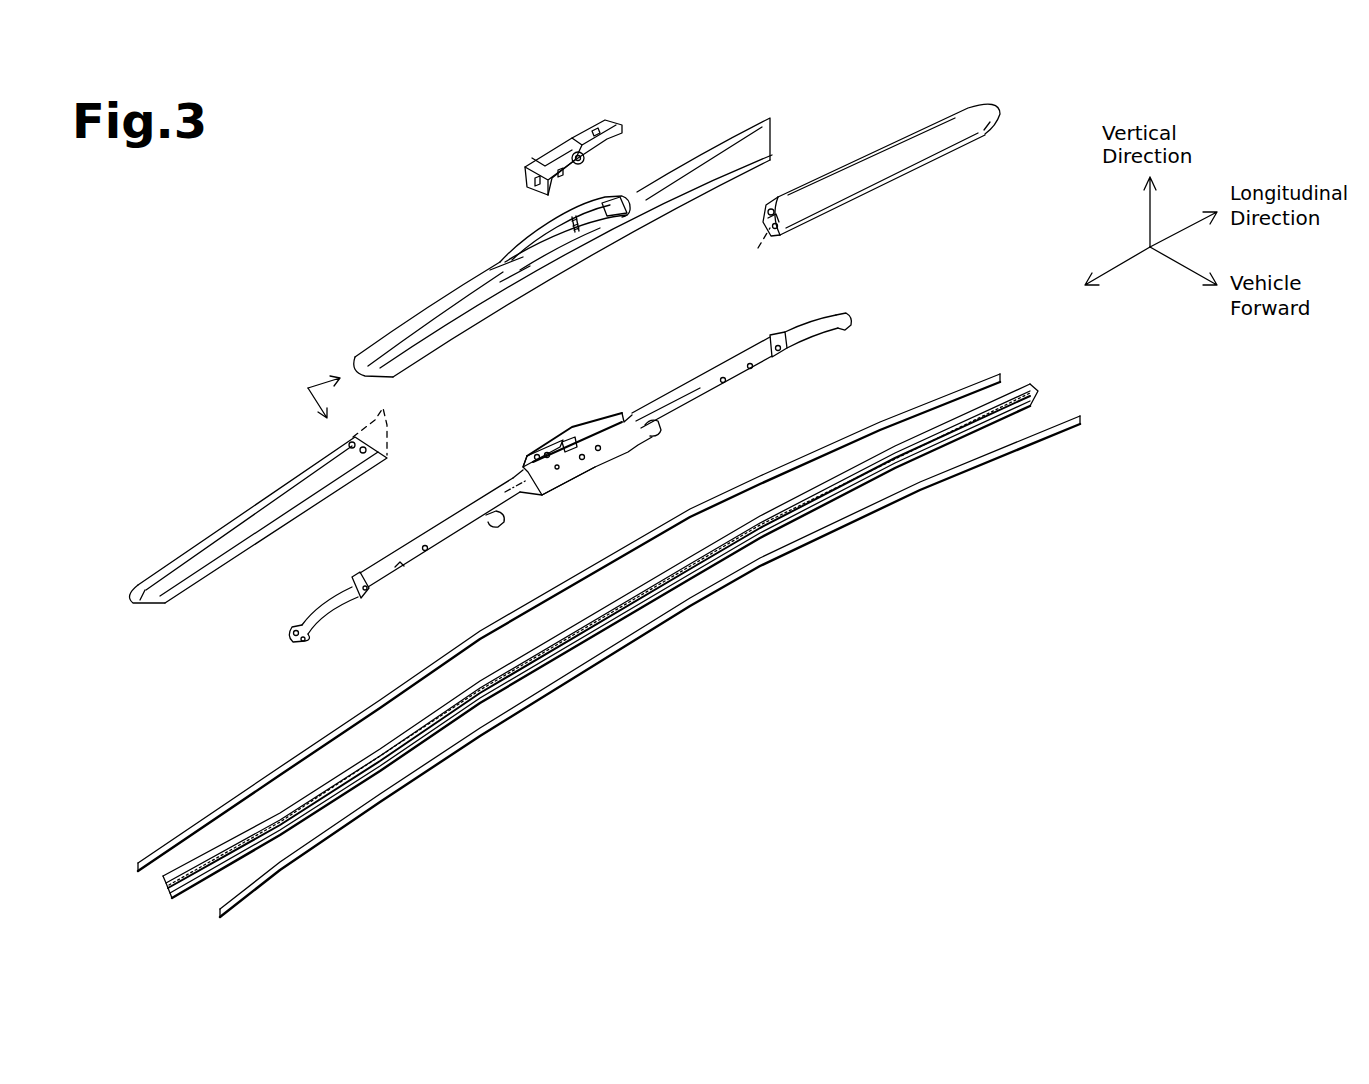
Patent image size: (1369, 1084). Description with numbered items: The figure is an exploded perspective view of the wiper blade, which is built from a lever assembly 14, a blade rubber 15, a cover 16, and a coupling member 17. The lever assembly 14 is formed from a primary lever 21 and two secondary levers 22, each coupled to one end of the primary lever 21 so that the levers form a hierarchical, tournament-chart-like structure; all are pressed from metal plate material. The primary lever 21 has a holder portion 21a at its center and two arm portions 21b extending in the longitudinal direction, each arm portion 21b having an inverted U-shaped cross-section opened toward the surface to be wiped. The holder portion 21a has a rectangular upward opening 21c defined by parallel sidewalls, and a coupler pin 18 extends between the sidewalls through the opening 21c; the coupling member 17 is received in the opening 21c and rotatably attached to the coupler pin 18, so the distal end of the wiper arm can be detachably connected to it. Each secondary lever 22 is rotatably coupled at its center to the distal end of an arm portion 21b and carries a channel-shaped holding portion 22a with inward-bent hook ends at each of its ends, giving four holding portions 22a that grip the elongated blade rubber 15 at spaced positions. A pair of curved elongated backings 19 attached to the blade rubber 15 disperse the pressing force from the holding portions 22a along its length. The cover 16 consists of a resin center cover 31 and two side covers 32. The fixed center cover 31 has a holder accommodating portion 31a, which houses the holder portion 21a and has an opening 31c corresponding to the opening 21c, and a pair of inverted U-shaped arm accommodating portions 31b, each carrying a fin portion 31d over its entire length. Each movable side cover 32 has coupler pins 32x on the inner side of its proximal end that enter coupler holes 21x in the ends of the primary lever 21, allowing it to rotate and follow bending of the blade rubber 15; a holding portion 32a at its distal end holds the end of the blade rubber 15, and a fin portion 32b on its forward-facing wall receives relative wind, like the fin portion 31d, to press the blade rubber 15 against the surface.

The lever assembly 14 is at (626, 395).
The blade rubber 15 is at (1028, 392).
The cover 16 is at (309, 395).
The coupling member 17 is at (592, 140).
The coupler pin 18 is at (558, 436).
The backing 19 is at (988, 378).
The primary lever 21 is at (564, 437).
The holder portion 21a is at (572, 466).
The arm portion 21b is at (414, 548).
The opening 21c is at (588, 426).
The coupler hole 21x is at (372, 578).
The secondary lever 22 is at (600, 504).
The holding portion 22a is at (870, 342).
The center cover 31 is at (563, 250).
The holder accommodating portion 31a is at (585, 245).
The arm accommodating portion 31b is at (715, 150).
The opening 31c is at (546, 243).
The fin portion 31d is at (708, 188).
The side cover 32 is at (581, 378).
The holding portion 32a is at (983, 132).
The fin portion 32b is at (842, 185).
The coupler pin 32x is at (566, 332).